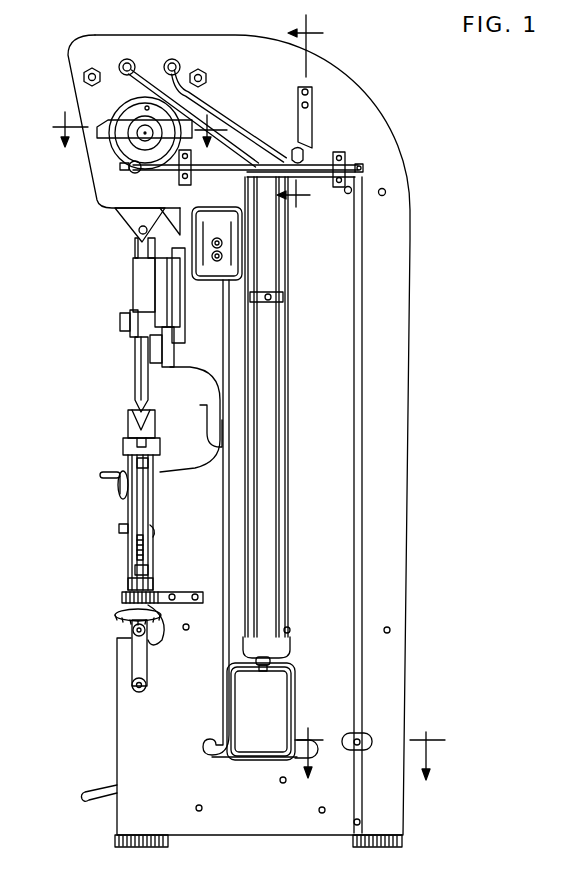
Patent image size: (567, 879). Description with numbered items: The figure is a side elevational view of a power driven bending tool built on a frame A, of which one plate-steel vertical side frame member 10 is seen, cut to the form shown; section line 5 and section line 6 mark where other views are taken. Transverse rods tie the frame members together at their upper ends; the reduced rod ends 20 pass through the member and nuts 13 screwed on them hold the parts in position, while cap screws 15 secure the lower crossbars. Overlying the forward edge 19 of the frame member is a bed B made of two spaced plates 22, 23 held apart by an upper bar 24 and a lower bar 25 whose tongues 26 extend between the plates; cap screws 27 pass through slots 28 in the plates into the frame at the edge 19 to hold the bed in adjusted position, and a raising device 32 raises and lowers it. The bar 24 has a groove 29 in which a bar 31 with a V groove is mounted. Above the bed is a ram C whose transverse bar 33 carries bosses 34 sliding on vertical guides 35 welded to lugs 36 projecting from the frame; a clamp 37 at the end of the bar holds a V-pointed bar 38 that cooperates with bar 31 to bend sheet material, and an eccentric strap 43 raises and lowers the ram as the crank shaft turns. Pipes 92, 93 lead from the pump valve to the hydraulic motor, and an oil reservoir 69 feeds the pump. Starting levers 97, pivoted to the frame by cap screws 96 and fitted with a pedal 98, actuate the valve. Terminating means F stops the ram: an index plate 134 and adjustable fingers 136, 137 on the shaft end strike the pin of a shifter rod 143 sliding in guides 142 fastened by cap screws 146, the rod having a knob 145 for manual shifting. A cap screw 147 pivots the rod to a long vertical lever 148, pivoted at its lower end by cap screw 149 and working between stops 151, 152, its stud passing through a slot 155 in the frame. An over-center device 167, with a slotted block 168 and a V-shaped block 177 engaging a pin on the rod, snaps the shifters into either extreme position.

The vertical side frame member 10 is at (399, 448).
The frame A is at (404, 318).
The nut 13 is at (55, 53).
The section line 5- 5 is at (140, 141).
The section line 6- 6 is at (371, 767).
The rod end 20 is at (90, 70).
The index plate 134 is at (133, 108).
The finger 137 is at (105, 128).
The finger 136 is at (182, 127).
The terminating means F is at (127, 138).
The knob 145 is at (129, 170).
The shifter rod 143 is at (259, 165).
The guide 142 is at (184, 172).
The cap screw 146 is at (190, 178).
The cap screw 147 is at (362, 165).
The block 168 is at (303, 118).
The over-center device 167 is at (312, 113).
The V-shaped block 177 is at (294, 155).
The stop 151 is at (347, 194).
The stop 152 is at (382, 196).
The pipe 93 is at (248, 478).
The pipe 92 is at (282, 517).
The oil reservoir 69 is at (278, 711).
The long vertical lever 148 is at (360, 505).
The slot 155 is at (364, 750).
The cap screw 149 is at (353, 826).
The cap screw 15 is at (319, 813).
The cap screw 96 is at (281, 783).
The boss 34 is at (168, 292).
The lug 36 is at (178, 235).
The eccentric strap 43 is at (135, 220).
The transverse bar 33 is at (140, 268).
The ram C is at (140, 292).
The clamp 37 is at (126, 332).
The vertical guide 35 is at (157, 350).
The bar 38 is at (140, 383).
The bar 31 is at (132, 423).
The groove 29 is at (145, 448).
The bar 24 is at (128, 450).
The forward edge 19 is at (152, 517).
The plate 23 is at (150, 502).
The tongue 26 is at (148, 463).
The slot 28 is at (157, 533).
The plate 22 is at (132, 512).
The cap screw 27 is at (123, 528).
The bed B is at (132, 547).
The bar 25 is at (133, 580).
The raising device 32 is at (117, 623).
The starting lever 97 is at (102, 785).
The pedal 98 is at (78, 790).